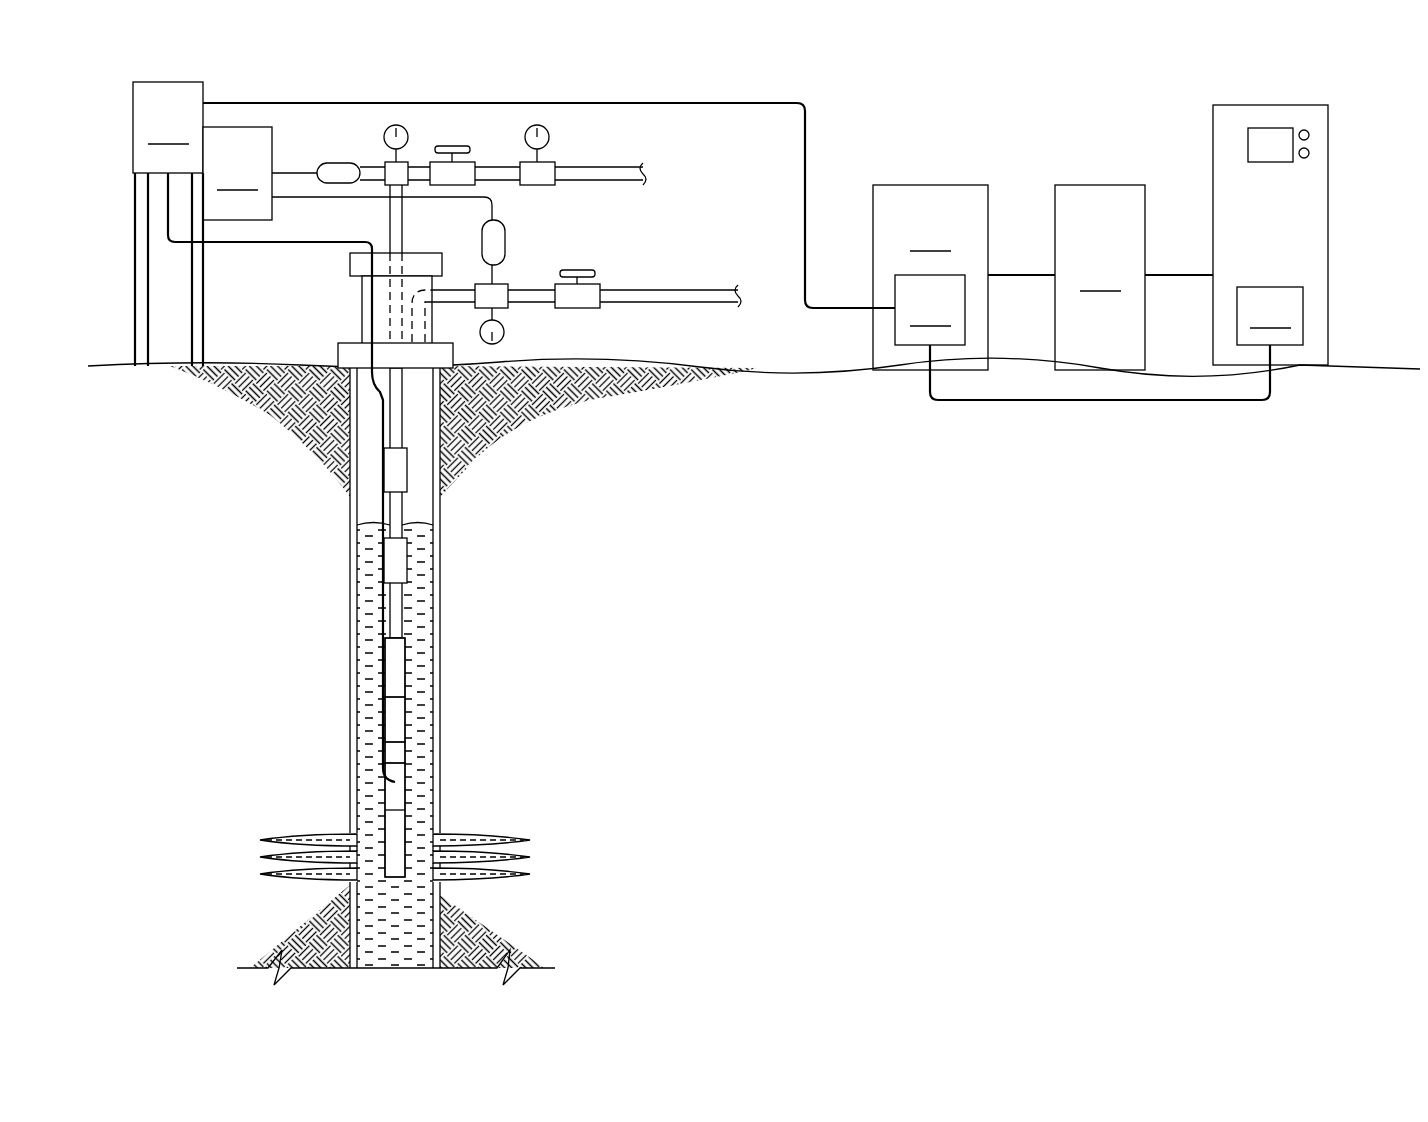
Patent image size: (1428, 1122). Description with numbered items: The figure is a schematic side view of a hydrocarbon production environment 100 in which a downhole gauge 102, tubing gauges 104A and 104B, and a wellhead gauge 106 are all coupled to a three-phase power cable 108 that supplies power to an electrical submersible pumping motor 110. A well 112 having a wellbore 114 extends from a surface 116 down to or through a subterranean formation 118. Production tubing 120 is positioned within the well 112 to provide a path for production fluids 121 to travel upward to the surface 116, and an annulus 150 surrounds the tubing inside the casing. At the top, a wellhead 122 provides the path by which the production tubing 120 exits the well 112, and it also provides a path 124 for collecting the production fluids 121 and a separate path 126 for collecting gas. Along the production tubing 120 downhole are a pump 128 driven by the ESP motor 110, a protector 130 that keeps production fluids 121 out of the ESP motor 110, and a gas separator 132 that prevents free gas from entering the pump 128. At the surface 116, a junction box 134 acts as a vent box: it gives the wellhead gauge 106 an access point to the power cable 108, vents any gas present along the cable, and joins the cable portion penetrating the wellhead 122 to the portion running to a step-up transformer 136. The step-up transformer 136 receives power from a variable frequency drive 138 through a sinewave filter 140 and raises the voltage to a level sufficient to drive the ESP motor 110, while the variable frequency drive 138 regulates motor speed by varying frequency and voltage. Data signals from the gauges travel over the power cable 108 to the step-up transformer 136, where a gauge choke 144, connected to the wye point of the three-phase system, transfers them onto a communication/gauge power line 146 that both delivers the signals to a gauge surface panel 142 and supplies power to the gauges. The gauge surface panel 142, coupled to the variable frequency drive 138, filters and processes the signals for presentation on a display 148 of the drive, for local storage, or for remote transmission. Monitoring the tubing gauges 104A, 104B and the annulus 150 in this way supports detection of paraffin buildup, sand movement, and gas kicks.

The hydrocarbon production environment 100 is at (997, 125).
The downhole gauge 102 is at (390, 820).
The tubing gauge 104A is at (400, 560).
The tubing gauge 104B is at (385, 470).
The wellhead gauge 106 is at (237, 173).
The three-phase power cable 108 is at (805, 205).
The electrical submersible pumping (ESP) motor 110 is at (405, 793).
The well 112 is at (331, 323).
The wellbore 114 is at (348, 732).
The surface 116 is at (676, 365).
The subterranean formation 118 is at (221, 633).
The production tubing 120 is at (403, 503).
The production fluids 121 is at (425, 622).
The wellhead 122 is at (338, 355).
The path for production fluids 124 is at (598, 167).
The path for gas 126 is at (668, 290).
The pump 128 is at (400, 663).
The protector 130 is at (405, 753).
The gas separator 132 is at (400, 720).
The junction box 134 is at (168, 127).
The step-up transformer 136 is at (930, 277).
The variable frequency drive (VFD) 138 is at (1330, 191).
The sinewave filter (SWF) 140 is at (1100, 277).
The gauge surface panel 142 is at (1270, 316).
The gauge choke 144 is at (930, 310).
The communication/gauge power line 146 is at (1100, 405).
The display 148 is at (1274, 163).
The annulus 150 is at (376, 494).